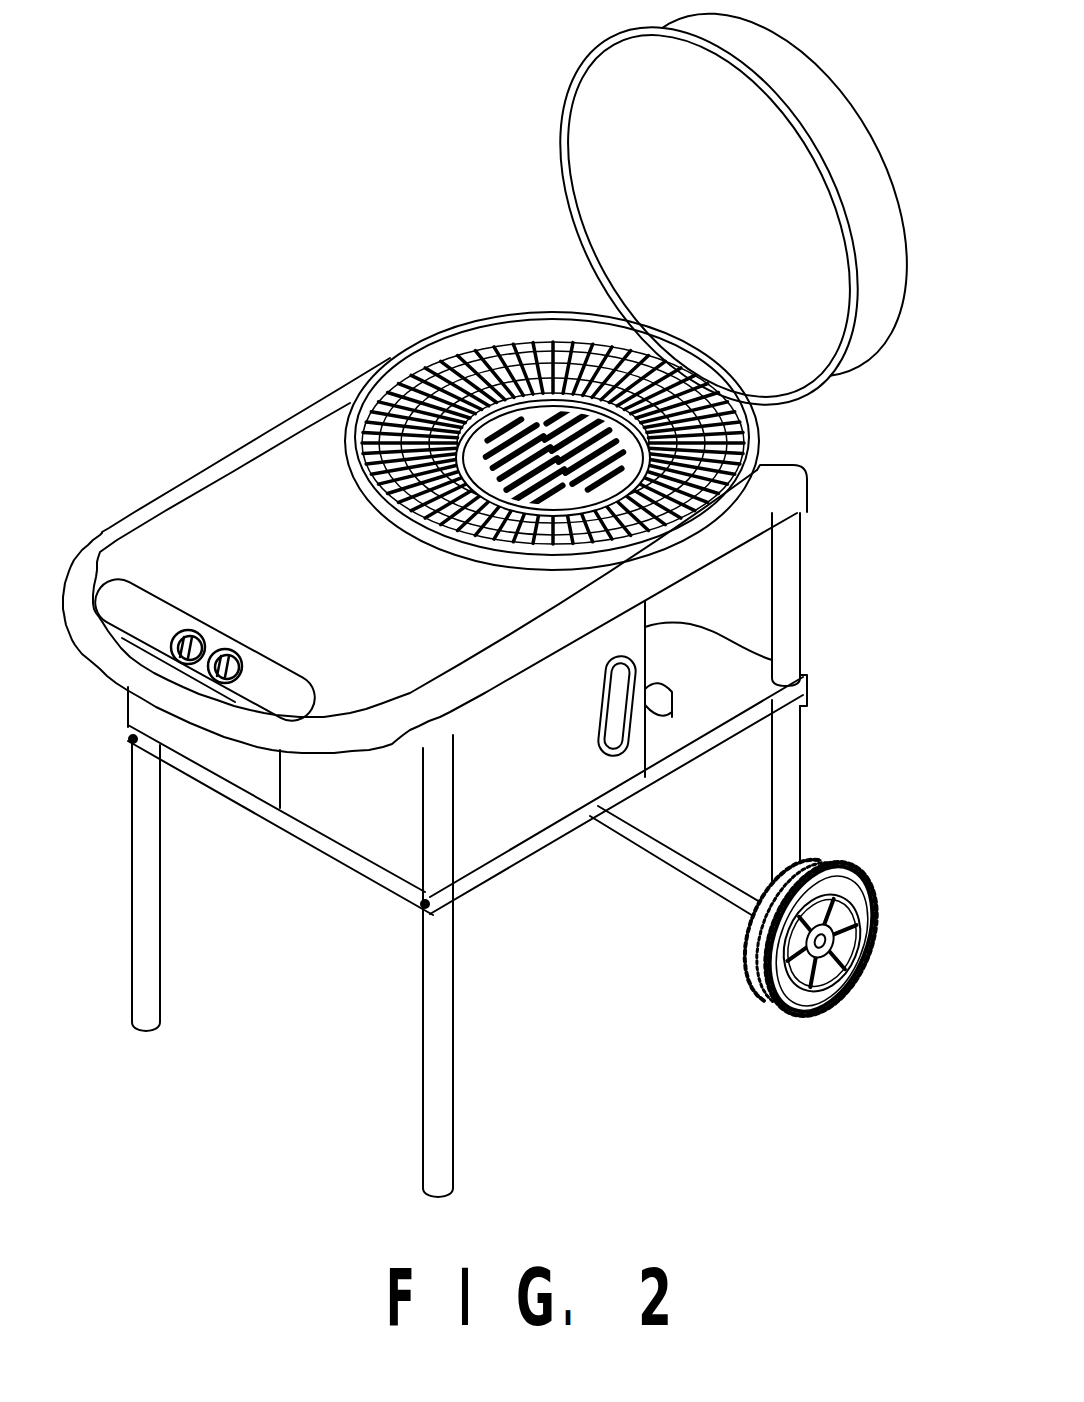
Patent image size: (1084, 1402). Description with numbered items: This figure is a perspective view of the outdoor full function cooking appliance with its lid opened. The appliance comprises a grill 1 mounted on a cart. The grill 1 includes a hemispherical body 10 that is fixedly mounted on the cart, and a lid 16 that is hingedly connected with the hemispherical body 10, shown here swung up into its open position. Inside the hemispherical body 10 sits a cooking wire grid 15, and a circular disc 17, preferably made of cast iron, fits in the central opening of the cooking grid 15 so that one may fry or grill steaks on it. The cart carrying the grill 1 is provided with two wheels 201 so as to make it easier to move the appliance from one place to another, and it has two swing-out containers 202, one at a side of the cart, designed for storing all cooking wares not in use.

The grill 1 is at (436, 262).
The hemispherical body 10 is at (481, 333).
The cooking wire grid 15 is at (415, 383).
The lid 16 is at (847, 118).
The circular disc 17 is at (660, 456).
The wheel 201 is at (862, 887).
The swing-out container 202 is at (513, 828).